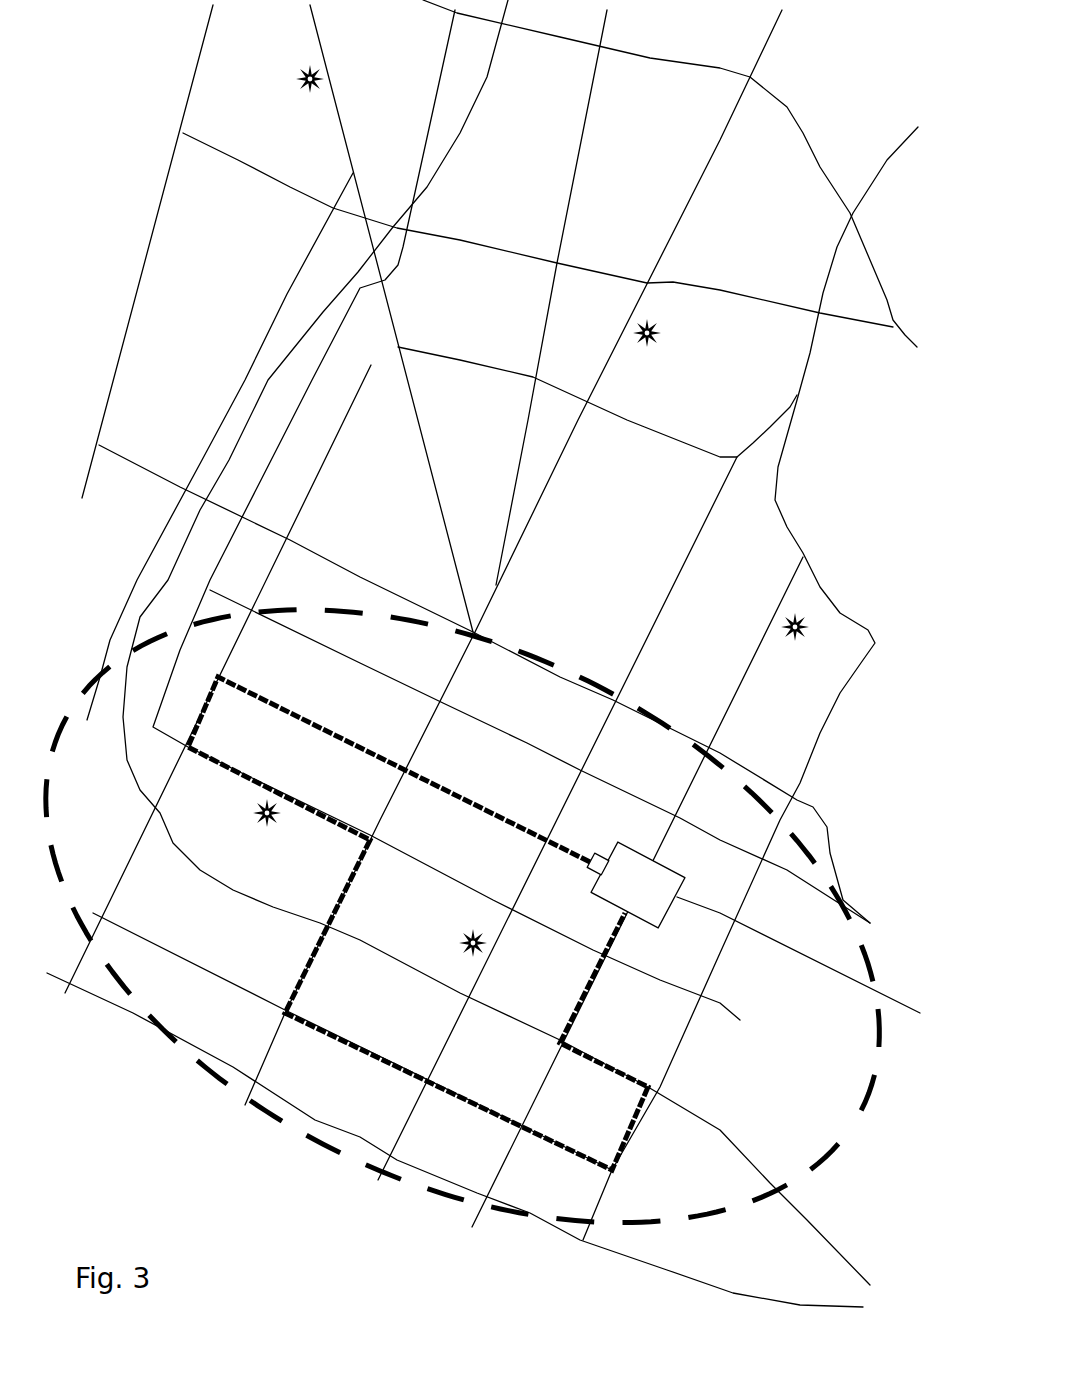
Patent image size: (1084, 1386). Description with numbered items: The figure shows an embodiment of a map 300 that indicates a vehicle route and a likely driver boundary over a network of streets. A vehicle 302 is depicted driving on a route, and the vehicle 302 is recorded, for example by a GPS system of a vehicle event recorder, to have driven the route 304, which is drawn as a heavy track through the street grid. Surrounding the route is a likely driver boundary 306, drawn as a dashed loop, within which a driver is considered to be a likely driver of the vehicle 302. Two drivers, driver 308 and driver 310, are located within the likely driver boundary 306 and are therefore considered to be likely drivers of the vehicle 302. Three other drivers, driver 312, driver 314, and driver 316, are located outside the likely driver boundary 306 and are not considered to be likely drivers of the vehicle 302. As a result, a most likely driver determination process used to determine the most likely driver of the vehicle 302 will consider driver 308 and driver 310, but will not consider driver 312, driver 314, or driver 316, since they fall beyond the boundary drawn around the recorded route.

The map 300 is at (863, 92).
The vehicle 302 is at (667, 915).
The route 304 is at (623, 1150).
The likely driver boundary 306 is at (867, 970).
The driver 308 is at (267, 827).
The driver 310 is at (460, 938).
The driver 312 is at (303, 93).
The driver 314 is at (660, 340).
The driver 316 is at (792, 640).